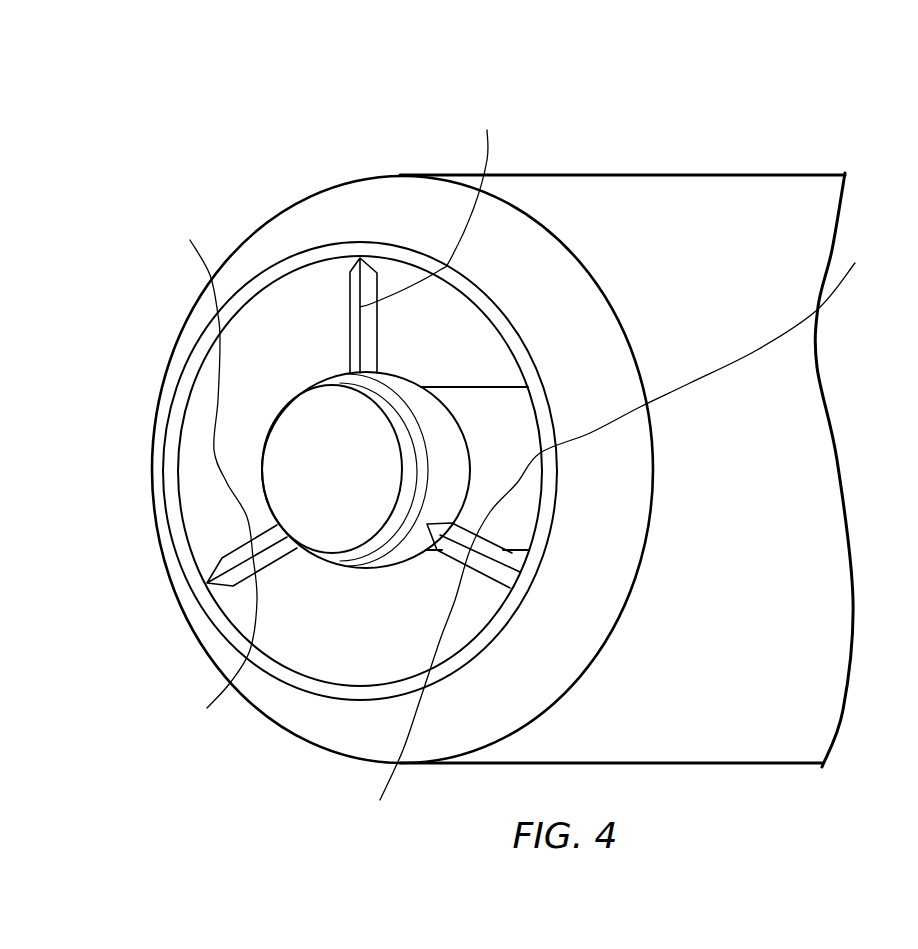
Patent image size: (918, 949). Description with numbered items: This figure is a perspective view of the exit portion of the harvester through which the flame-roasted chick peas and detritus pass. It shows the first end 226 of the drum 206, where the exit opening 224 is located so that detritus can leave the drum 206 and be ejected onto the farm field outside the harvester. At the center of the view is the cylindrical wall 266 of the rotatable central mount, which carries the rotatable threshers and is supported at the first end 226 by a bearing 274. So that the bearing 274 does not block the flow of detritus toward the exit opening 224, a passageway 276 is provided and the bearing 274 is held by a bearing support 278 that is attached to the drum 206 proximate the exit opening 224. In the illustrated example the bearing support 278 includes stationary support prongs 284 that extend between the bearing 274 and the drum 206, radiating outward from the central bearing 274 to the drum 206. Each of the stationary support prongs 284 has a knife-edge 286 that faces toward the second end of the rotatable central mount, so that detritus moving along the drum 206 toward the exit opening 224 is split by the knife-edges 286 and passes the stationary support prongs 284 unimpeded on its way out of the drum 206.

The drum 206 is at (757, 192).
The exit opening 224 is at (333, 469).
The first end 226 is at (357, 94).
The cylindrical wall 266 is at (522, 505).
The bearing 274 is at (360, 565).
The passageway 276 is at (150, 575).
The bearing support 278 is at (310, 525).
The stationary support prongs 284 is at (353, 327).
The knife-edge 286 is at (521, 451).